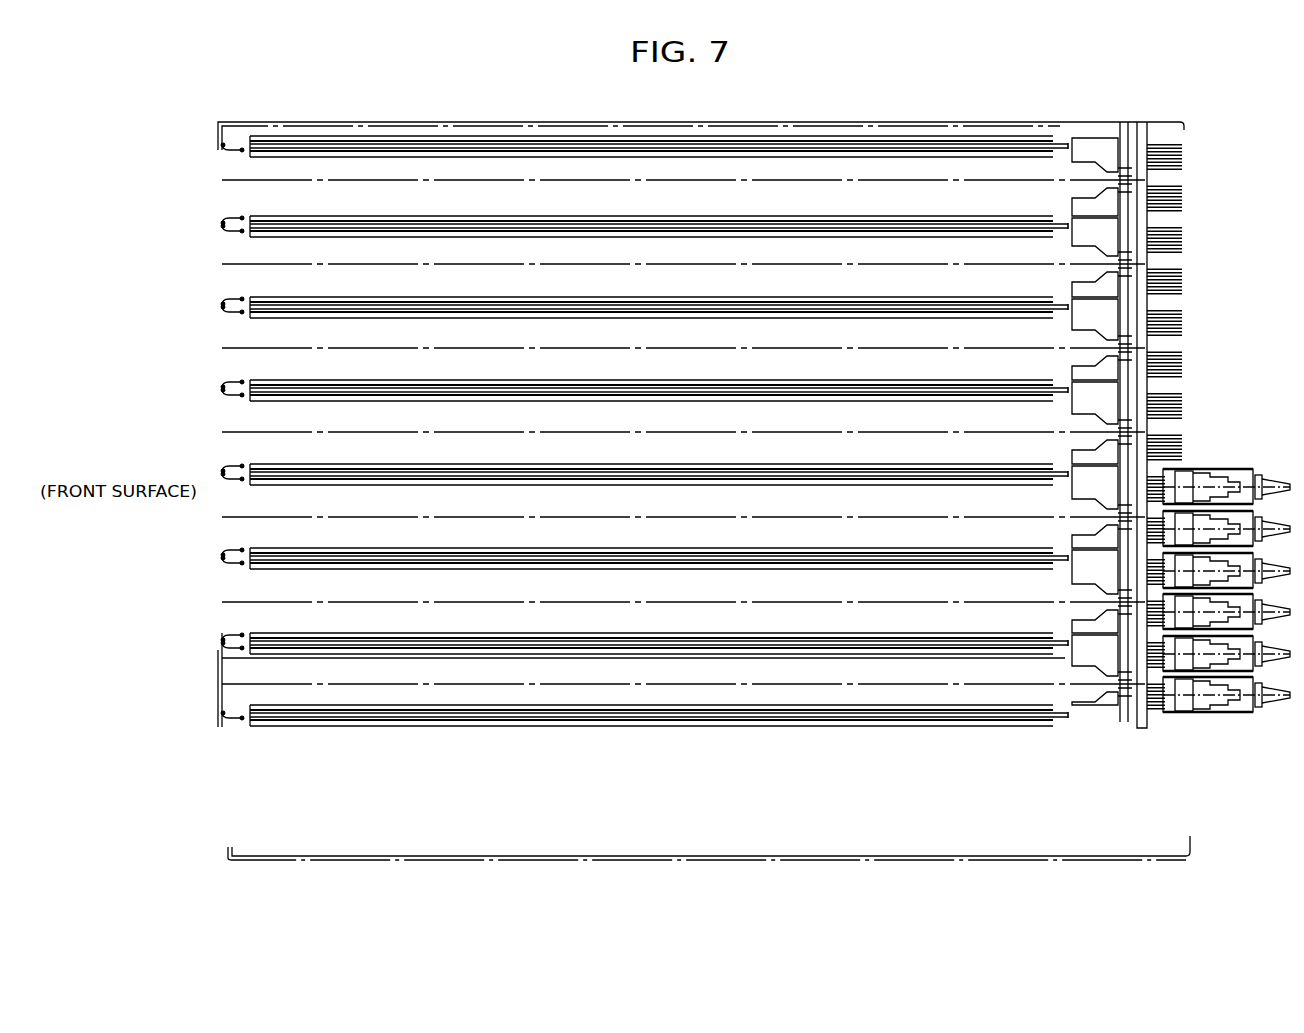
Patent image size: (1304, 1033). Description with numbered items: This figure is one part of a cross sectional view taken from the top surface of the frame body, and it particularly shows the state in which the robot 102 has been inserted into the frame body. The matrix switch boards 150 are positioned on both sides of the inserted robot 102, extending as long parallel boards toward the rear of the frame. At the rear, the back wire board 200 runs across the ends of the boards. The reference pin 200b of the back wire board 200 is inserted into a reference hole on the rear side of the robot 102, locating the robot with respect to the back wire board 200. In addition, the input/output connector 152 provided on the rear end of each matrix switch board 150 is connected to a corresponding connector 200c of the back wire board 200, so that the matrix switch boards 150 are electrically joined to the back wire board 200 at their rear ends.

The robot 102 is at (216, 702).
The matrix switch board 150 is at (500, 655).
The input/output connector 152 is at (1100, 712).
The back wire board 200 is at (1143, 728).
The reference pin 200b is at (1068, 712).
The connector 200c is at (1130, 712).